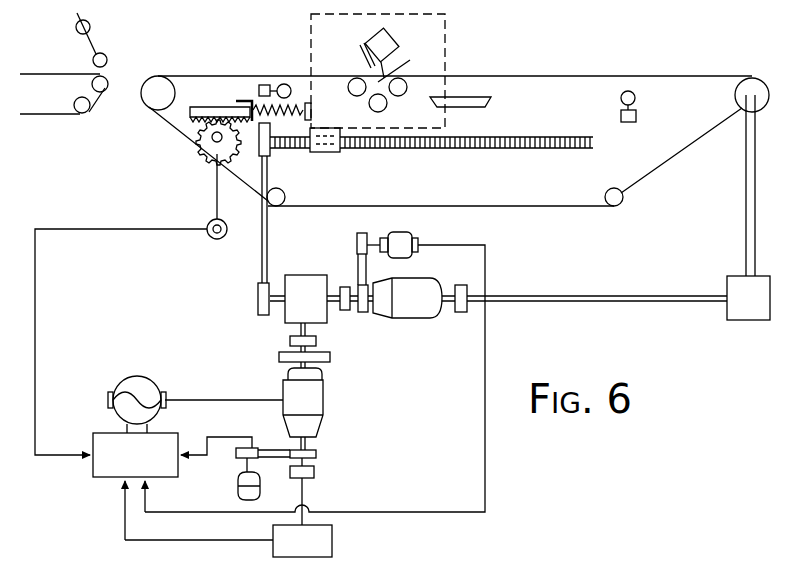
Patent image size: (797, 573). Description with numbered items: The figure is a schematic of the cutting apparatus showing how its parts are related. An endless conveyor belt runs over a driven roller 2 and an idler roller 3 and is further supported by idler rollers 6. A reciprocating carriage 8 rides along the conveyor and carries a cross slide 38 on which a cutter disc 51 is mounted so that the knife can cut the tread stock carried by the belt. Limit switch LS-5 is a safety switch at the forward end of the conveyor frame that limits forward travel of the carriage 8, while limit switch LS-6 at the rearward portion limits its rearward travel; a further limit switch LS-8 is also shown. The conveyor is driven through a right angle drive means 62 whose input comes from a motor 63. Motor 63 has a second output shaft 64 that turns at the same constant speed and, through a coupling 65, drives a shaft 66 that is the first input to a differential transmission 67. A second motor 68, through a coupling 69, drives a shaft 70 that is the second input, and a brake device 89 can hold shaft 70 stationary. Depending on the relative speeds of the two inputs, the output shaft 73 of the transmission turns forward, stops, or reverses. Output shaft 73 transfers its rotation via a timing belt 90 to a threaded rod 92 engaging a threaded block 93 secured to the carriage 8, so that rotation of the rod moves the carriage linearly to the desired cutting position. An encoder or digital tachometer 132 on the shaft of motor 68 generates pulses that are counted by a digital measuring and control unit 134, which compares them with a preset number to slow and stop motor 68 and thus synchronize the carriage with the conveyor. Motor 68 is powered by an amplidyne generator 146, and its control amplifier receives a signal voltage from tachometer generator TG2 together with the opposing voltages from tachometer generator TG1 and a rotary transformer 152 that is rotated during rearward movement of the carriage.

The limit switch LS-8 is at (97, 43).
The limit switch LS-6 is at (267, 85).
The limit switch LS-5 is at (637, 116).
The idler roller 3 is at (158, 100).
The cross slide 38 is at (326, 29).
The cutter disc 51 is at (403, 60).
The reciprocating carriage 8 is at (466, 65).
The driven roller 2 is at (752, 80).
The threaded rod 92 is at (533, 136).
The threaded block 93 is at (330, 152).
The idler rollers 6 is at (285, 193).
The rotary transformer 152 is at (208, 222).
The timing belt 90 is at (262, 246).
The output shaft 73 is at (282, 322).
The differential transmission 67 is at (318, 280).
The shaft 66 is at (334, 290).
The coupling 65 is at (347, 312).
The second output shaft 64 is at (370, 312).
The motor 63 is at (412, 307).
The right angle drive means 62 is at (748, 307).
The tachometer generator TG1 is at (400, 240).
The tachometer generator TG2 is at (236, 486).
The shaft 70 is at (290, 341).
The coupling 69 is at (280, 357).
The brake device 89 is at (288, 374).
The motor 68 is at (308, 404).
The encoder or digital tachometer 132 is at (314, 472).
The digital measuring and control unit 134 is at (325, 545).
The amplidyne generator 146 is at (127, 390).